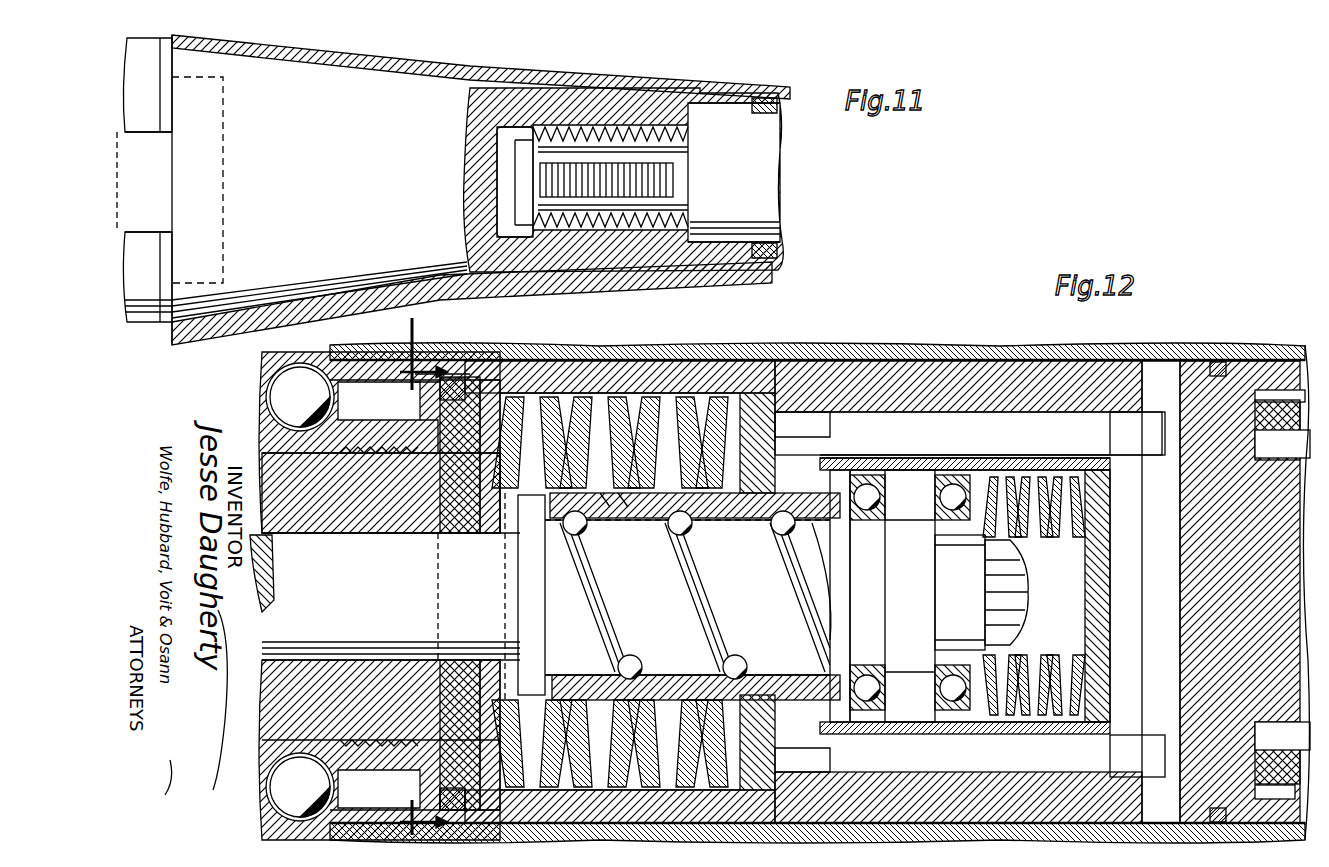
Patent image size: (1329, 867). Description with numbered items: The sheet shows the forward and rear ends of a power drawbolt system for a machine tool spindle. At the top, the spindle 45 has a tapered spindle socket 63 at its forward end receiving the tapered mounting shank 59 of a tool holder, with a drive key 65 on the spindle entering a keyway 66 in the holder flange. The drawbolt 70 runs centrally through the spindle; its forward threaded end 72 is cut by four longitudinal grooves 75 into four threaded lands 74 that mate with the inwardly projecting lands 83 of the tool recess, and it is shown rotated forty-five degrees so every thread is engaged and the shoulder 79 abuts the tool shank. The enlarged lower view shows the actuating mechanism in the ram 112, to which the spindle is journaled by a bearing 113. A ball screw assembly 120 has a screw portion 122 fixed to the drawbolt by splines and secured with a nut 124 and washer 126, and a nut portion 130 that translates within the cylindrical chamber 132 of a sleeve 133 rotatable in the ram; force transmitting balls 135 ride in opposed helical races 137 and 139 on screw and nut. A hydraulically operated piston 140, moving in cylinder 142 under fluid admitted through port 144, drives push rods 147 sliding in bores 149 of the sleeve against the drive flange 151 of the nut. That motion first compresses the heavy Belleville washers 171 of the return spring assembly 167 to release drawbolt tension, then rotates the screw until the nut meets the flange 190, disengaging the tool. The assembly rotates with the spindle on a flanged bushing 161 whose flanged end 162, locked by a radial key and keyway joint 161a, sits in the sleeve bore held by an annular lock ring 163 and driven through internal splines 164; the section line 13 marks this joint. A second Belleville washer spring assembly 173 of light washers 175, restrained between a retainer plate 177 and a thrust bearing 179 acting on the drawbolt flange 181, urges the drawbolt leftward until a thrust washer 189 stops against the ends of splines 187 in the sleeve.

In FIG. 12, the section line 13 is at (408, 576).
In FIG. 11, the spindle 45 is at (760, 92).
In FIG. 12, the spindle 45 is at (262, 478).
In FIG. 11, the tapered mounting shank 59 is at (236, 320).
In FIG. 11, the tapered spindle socket 63 is at (392, 74).
In FIG. 11, the drive key 65 is at (121, 133).
In FIG. 11, the keyway 66 is at (138, 232).
In FIG. 11, the drawbolt 70 is at (782, 150).
In FIG. 12, the drawbolt 70 is at (252, 548).
In FIG. 11, the forward threaded end 72 is at (508, 187).
In FIG. 11, the threaded lands 74 is at (672, 180).
In FIG. 11, the longitudinal grooves 75 is at (670, 204).
In FIG. 11, the shoulder 79 is at (684, 157).
In FIG. 11, the threaded lands 83 is at (678, 135).
In FIG. 12, the ram 112 is at (888, 361).
In FIG. 12, the bearing 113 is at (262, 430).
In FIG. 12, the screw assembly 120 is at (738, 358).
In FIG. 12, the screw portion 122 is at (545, 588).
In FIG. 12, the nut 124 is at (1018, 622).
In FIG. 12, the washer 126 is at (968, 578).
In FIG. 12, the nut portion 130 is at (722, 512).
In FIG. 12, the cylindrical chamber 132 is at (802, 592).
In FIG. 12, the sleeve 133 is at (652, 361).
In FIG. 12, the force transmitting balls 135 is at (672, 532).
In FIG. 12, the helical race 137 is at (612, 632).
In FIG. 12, the helical race 139 is at (836, 516).
In FIG. 12, the hydraulically operated piston 140 is at (1232, 361).
In FIG. 12, the cylinder 142 is at (1165, 361).
In FIG. 12, the port 144 is at (1300, 356).
In FIG. 12, the push rods 147 is at (1150, 455).
In FIG. 12, the bores 149 is at (966, 411).
In FIG. 12, the drive flange 151 is at (760, 450).
In FIG. 12, the flanged bushing 161 is at (372, 533).
In FIG. 12, the radial key and keyway joint 161a is at (425, 487).
In FIG. 12, the flanged end 162 is at (472, 533).
In FIG. 12, the annular lock ring 163 is at (438, 797).
In FIG. 12, the internal splines 164 is at (455, 382).
In FIG. 12, the spring assembly 167 is at (586, 392).
In FIG. 12, the Belleville washers 171 is at (650, 506).
In FIG. 12, the second Belleville washer spring assembly 173 is at (1038, 470).
In FIG. 12, the Belleville spring washers 175 is at (1060, 530).
In FIG. 12, the retainer plate 177 is at (1085, 562).
In FIG. 12, the thrust bearing 179 is at (956, 690).
In FIG. 12, the flange 181 is at (918, 722).
In FIG. 12, the splines 187 is at (822, 465).
In FIG. 12, the thrust washer 189 is at (852, 676).
In FIG. 12, the flange 190 is at (518, 612).